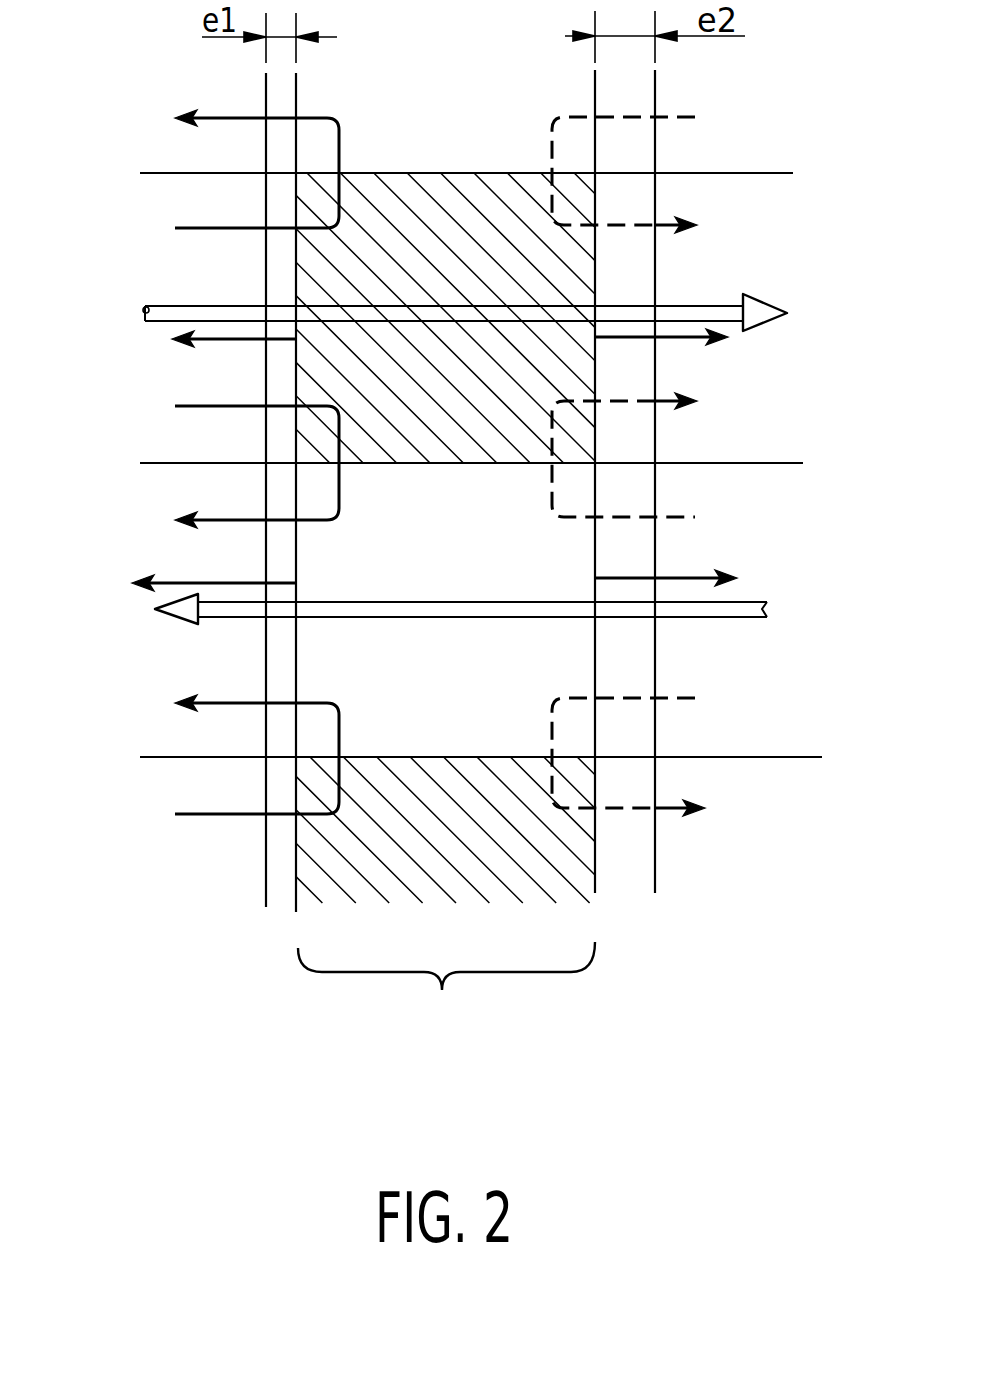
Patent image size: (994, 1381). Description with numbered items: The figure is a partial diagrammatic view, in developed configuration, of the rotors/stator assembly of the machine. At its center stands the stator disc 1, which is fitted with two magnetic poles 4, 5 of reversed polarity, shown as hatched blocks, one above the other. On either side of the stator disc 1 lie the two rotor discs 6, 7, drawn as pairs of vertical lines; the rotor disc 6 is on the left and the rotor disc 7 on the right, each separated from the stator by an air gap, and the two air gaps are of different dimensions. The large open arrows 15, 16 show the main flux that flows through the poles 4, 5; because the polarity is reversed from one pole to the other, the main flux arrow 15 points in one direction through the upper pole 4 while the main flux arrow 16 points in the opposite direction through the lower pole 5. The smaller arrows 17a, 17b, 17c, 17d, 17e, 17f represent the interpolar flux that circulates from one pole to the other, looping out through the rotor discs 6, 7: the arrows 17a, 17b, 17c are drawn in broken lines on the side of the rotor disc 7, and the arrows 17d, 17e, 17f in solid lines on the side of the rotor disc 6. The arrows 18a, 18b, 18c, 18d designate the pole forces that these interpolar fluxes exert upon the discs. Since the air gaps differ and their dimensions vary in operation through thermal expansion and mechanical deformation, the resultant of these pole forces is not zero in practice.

The stator disc 1 is at (446, 991).
The magnetic pole 4 is at (545, 258).
The magnetic pole 5 is at (510, 533).
The rotor disc 6 is at (220, 945).
The rotor disc 7 is at (714, 945).
The main flux arrow 15 is at (744, 296).
The main flux arrow 16 is at (174, 618).
The interpolar flux arrow 17a is at (672, 226).
The interpolar flux arrow 17b is at (680, 407).
The interpolar flux arrow 17c is at (693, 813).
The interpolar flux arrow 17d is at (190, 112).
The interpolar flux arrow 17e is at (190, 515).
The interpolar flux arrow 17f is at (188, 706).
The pole force arrow 18a is at (714, 339).
The pole force arrow 18b is at (717, 577).
The pole force arrow 18c is at (190, 343).
The pole force arrow 18d is at (165, 581).